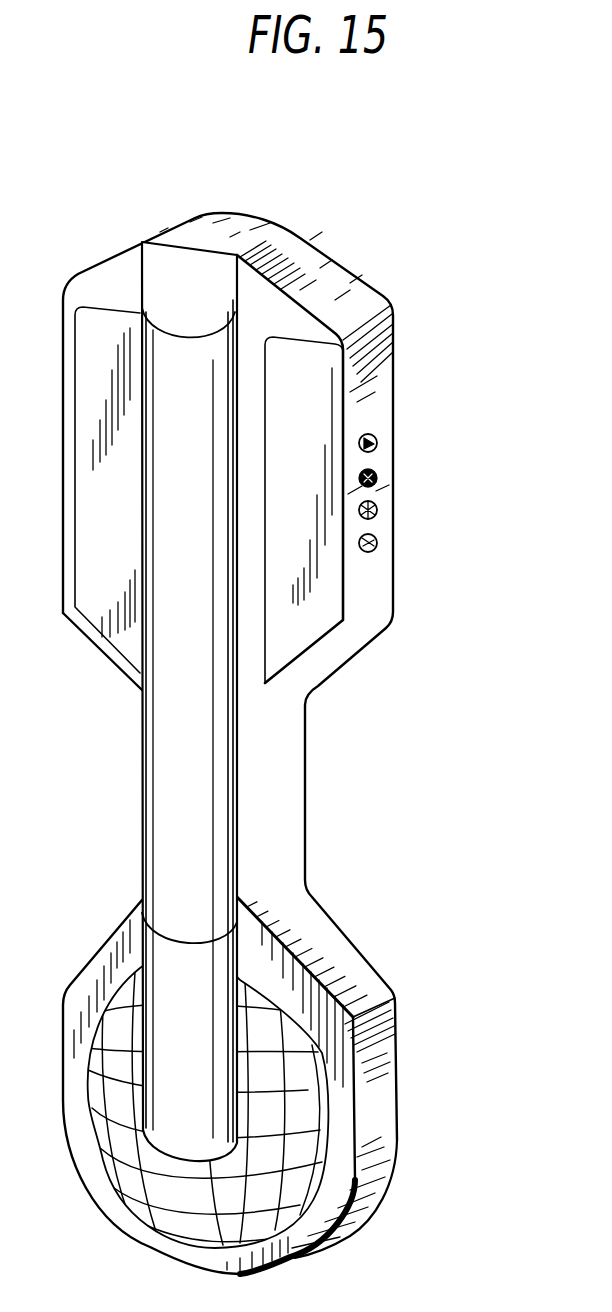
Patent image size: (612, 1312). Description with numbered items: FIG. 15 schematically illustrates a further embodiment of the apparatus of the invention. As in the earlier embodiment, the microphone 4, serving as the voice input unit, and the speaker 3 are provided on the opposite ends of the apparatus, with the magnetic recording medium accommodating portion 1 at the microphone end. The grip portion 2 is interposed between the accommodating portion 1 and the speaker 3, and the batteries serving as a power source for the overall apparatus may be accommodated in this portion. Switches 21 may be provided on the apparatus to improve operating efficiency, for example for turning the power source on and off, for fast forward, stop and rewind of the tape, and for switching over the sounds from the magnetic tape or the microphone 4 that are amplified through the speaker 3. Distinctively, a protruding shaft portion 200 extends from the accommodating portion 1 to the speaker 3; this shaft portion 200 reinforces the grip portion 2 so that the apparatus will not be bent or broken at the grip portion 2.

The magnetic recording medium accommodating portion 1 is at (327, 373).
The grip portion 2 is at (285, 750).
The speaker 3 is at (320, 1128).
The microphone 4 is at (237, 218).
The switches 21 is at (378, 443).
The protruding shaft portion 200 is at (153, 825).